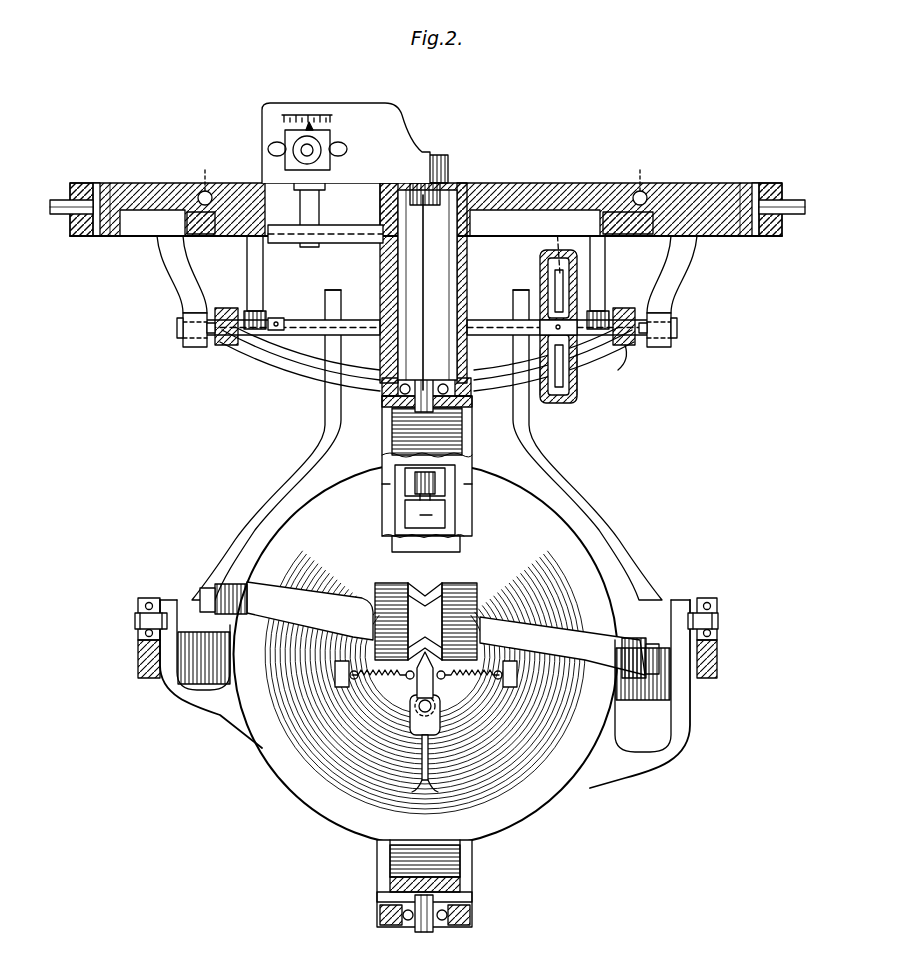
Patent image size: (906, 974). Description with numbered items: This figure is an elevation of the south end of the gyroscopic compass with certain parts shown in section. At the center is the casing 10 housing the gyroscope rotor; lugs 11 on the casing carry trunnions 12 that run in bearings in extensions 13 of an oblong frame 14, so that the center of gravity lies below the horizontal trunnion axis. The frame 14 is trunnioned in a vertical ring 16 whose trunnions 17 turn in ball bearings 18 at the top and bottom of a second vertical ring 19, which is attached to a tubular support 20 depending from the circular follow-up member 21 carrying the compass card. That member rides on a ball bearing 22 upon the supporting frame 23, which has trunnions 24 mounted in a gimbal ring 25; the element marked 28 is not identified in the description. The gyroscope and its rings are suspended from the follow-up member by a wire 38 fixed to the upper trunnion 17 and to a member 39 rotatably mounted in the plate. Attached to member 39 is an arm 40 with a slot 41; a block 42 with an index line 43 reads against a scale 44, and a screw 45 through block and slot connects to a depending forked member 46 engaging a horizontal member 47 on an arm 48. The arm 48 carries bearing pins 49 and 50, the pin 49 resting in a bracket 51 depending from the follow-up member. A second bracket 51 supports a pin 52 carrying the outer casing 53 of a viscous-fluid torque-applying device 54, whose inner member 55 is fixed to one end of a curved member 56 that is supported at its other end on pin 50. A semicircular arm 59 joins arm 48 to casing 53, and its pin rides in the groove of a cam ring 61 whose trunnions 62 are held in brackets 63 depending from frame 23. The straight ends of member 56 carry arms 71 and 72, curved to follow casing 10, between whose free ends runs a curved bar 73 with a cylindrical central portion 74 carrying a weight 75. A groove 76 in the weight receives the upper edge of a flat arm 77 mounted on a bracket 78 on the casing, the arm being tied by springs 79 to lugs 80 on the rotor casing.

The casing 10 is at (330, 805).
The lugs 11 is at (185, 700).
The trunnion 12 is at (140, 621).
The extension 13 is at (149, 598).
The oblong frame 14 is at (138, 655).
The vertical ring 16 is at (455, 426).
The trunnions 17 is at (430, 378).
The ball bearings 18 is at (388, 400).
The second vertical ring 19 is at (462, 392).
The tubular support 20 is at (467, 262).
The follow-up member 21 is at (528, 192).
The ball bearing 22 is at (419, 173).
The supporting frame 23 is at (152, 190).
The trunnions 24 is at (62, 205).
The gimbal ring 25 is at (80, 186).
The bearing sleeve 28 is at (200, 233).
The wire 38 is at (425, 262).
The member 39 is at (455, 183).
The arm 40 is at (400, 128).
The slot 41 is at (338, 151).
The block 42 is at (285, 143).
The index line 43 is at (330, 128).
The scale 44 is at (318, 118).
The screw 45 is at (296, 158).
The forked member 46 is at (319, 196).
The horizontal member 47 is at (344, 243).
The arm 48 is at (325, 300).
The bearing pin 49 is at (256, 330).
The bearing pin 50 is at (285, 320).
The bracket 51 is at (258, 272).
The pin 52 is at (620, 366).
The outer casing 53 is at (578, 378).
The torque-applying device 54 is at (558, 403).
The inner member 55 is at (557, 241).
The curved member 56 is at (370, 320).
The semicircular arm 59 is at (312, 372).
The cam ring 61 is at (232, 348).
The trunnions 62 is at (177, 333).
The brackets 63 is at (183, 275).
The arm 71 is at (262, 494).
The arm 72 is at (612, 509).
The curved bar 73 is at (298, 602).
The central portion 74 is at (388, 612).
The weight 75 is at (395, 582).
The groove 76 is at (425, 594).
The flat arm 77 is at (418, 676).
The bracket 78 is at (410, 712).
The springs 79 is at (372, 666).
The lugs 80 is at (335, 672).